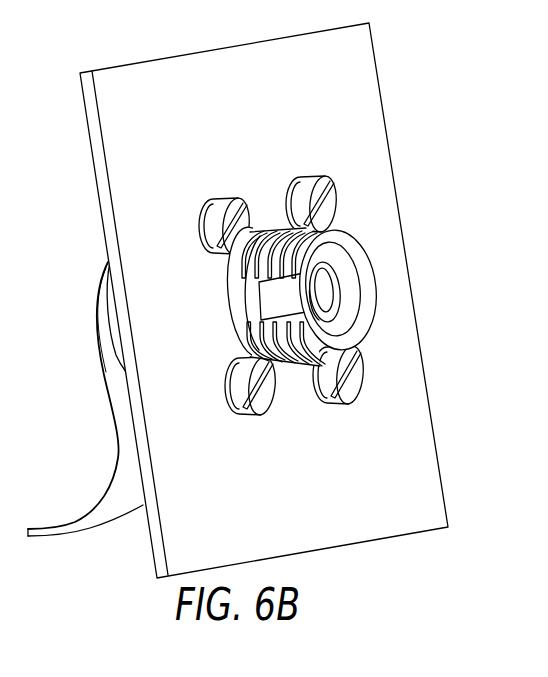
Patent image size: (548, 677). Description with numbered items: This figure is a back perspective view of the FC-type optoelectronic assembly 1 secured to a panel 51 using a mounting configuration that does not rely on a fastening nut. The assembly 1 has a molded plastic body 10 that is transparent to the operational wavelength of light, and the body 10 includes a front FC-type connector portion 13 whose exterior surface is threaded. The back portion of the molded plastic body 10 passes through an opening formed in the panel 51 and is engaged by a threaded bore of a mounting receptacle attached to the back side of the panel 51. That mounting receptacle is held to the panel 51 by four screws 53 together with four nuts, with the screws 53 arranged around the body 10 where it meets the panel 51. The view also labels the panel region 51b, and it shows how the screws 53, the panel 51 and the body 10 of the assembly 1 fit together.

The FC-type optoelectronic assembly 1 is at (369, 223).
The molded plastic body 10 is at (318, 295).
The front FC-type connector portion 13 is at (250, 347).
The panel 51 is at (384, 106).
The panel side 51b is at (410, 471).
The screws 53 is at (209, 198).